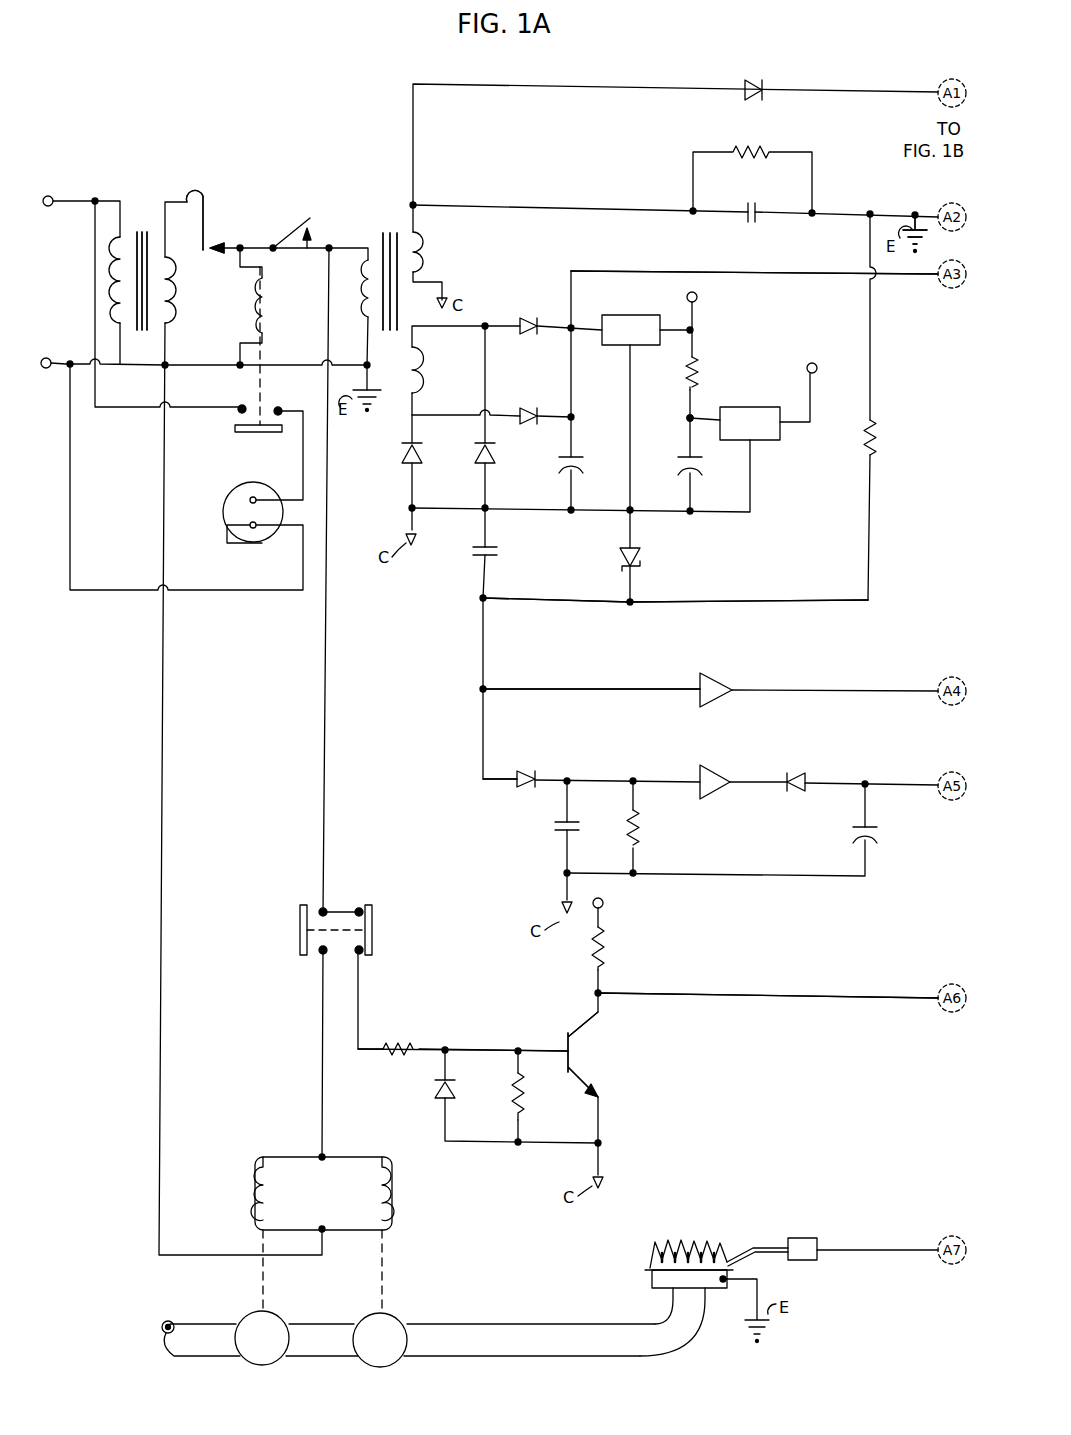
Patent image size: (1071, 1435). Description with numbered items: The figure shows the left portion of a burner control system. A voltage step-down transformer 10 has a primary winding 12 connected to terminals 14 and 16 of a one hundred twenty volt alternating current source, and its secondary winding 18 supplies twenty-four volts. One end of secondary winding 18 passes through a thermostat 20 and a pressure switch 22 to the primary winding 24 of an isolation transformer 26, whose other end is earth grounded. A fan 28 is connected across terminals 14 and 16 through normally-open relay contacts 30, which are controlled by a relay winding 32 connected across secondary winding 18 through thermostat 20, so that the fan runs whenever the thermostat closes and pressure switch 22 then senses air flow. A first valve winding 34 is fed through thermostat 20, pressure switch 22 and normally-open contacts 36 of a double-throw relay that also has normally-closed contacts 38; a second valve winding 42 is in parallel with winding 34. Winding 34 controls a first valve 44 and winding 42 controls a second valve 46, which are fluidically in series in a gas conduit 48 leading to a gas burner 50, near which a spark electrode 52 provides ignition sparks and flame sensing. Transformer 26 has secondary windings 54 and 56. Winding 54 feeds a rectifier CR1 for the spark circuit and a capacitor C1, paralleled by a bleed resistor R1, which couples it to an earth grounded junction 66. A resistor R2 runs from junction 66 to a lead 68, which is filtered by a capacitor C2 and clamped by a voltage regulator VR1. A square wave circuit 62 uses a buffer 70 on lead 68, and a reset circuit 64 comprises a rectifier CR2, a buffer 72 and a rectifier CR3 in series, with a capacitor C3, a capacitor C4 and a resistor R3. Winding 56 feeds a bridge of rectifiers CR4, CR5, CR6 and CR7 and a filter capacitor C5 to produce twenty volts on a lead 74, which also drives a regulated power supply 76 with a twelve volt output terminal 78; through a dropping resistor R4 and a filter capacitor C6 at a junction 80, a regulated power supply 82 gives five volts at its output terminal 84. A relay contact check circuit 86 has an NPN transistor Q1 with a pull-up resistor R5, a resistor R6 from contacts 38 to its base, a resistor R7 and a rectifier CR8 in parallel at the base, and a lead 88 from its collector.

The voltage step-down transformer 10 is at (145, 212).
The primary winding 12 is at (122, 330).
The terminal 14 is at (50, 212).
The terminal 16 is at (46, 357).
The secondary winding 18 is at (178, 277).
The thermostat 20 is at (209, 195).
The pressure switch 22 is at (303, 222).
The primary winding 24 is at (364, 302).
The isolation transformer 26 is at (387, 208).
The fan 28 is at (233, 496).
The relay contacts 30 is at (266, 408).
The relay winding 32 is at (272, 298).
The first valve winding 34 is at (273, 1197).
The normally-open relay contacts 36 is at (317, 951).
The normally-closed contacts 38 is at (359, 948).
The second valve winding 42 is at (368, 1192).
The first valve 44 is at (272, 1325).
The second valve 46 is at (392, 1328).
The gas conduit 48 is at (199, 1342).
The gas burner 50 is at (655, 1277).
The spark electrode 52 is at (759, 1245).
The secondary winding 54 is at (424, 244).
The secondary winding 56 is at (422, 362).
The 60 Hz square wave circuit 62 is at (598, 666).
The reset circuit 64 is at (569, 749).
The junction 66 is at (915, 215).
The lead 68 is at (723, 600).
The buffer 70 is at (712, 677).
The buffer 72 is at (711, 773).
The lead 74 is at (595, 270).
The regulated power supply 76 is at (611, 318).
The output terminal 78 is at (697, 299).
The junction 80 is at (688, 416).
The regulated power supply 82 is at (743, 406).
The output terminal 84 is at (814, 372).
The relay contact check circuit 86 is at (414, 1019).
The lead 88 is at (705, 993).
The rectifier CR1 is at (742, 86).
The rectifier CR2 is at (520, 788).
The rectifier CR3 is at (788, 792).
The rectifier CR4 is at (546, 318).
The rectifier CR5 is at (546, 401).
The rectifier CR6 is at (410, 446).
The rectifier CR7 is at (494, 450).
The rectifier CR8 is at (438, 1102).
The resistor R1 is at (745, 150).
The resistor R2 is at (873, 438).
The resistor R3 is at (637, 825).
The dropping resistor R4 is at (698, 376).
The pull-up resistor R5 is at (603, 951).
The resistor R6 is at (402, 1058).
The resistor R7 is at (509, 1095).
The capacitor C1 is at (756, 212).
The capacitor C2 is at (491, 550).
The capacitor C3 is at (869, 826).
The capacitor C4 is at (565, 836).
The filter capacitor C5 is at (576, 458).
The capacitor C6 is at (697, 457).
The voltage regulator VR1 is at (640, 570).
The NPN transistor Q1 is at (591, 1052).